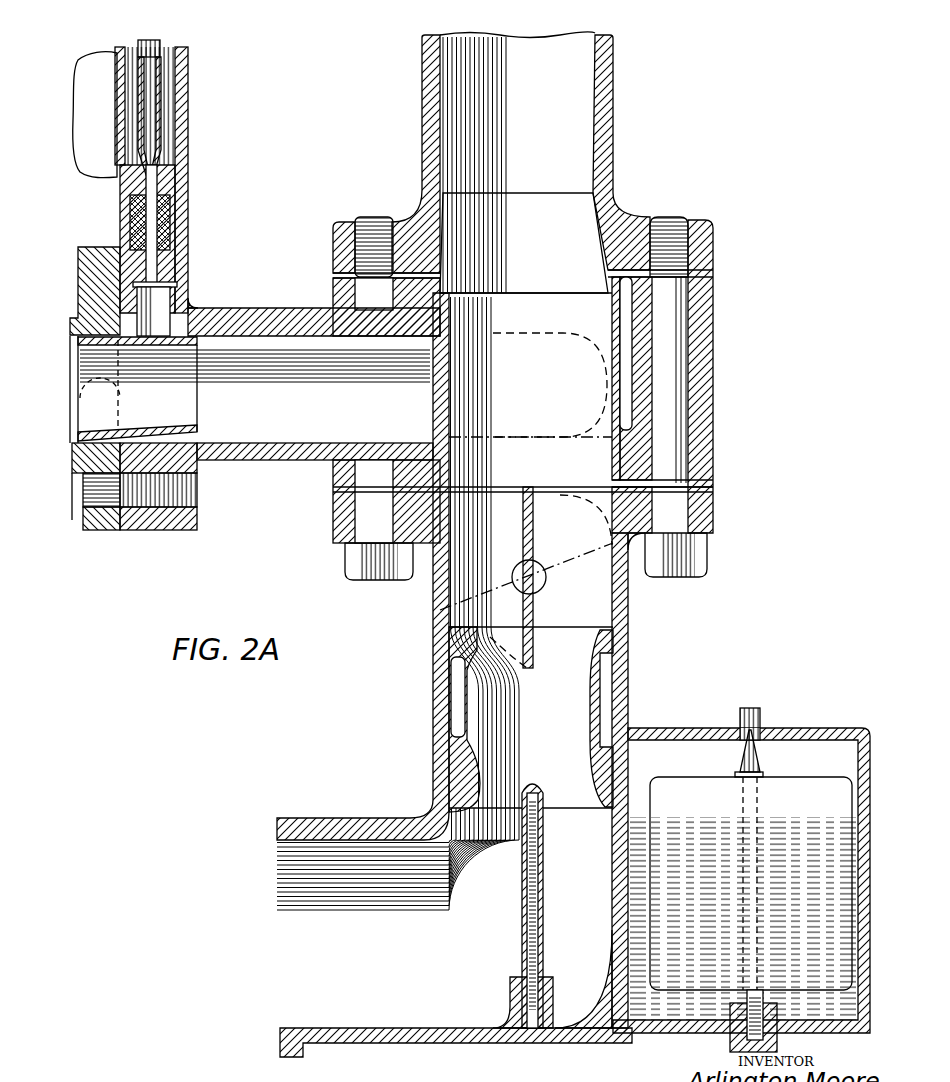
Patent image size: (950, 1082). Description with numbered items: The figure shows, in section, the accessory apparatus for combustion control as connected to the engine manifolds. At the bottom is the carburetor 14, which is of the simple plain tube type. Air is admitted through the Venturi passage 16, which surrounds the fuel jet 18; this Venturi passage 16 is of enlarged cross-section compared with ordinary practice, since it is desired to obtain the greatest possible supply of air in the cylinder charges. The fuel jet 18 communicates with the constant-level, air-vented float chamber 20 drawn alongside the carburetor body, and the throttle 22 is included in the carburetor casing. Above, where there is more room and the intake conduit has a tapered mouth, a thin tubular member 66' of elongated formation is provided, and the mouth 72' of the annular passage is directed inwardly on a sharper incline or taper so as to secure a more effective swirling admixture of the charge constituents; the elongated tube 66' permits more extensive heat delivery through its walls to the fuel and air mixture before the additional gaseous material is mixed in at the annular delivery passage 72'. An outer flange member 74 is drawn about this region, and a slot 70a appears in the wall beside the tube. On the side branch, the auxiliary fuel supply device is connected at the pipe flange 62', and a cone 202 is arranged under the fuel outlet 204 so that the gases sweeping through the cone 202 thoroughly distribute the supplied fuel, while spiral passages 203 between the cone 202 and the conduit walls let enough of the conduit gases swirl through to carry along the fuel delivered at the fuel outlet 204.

The carburetor 14 is at (493, 1042).
The Venturi passage 16 is at (480, 773).
The fuel jet 18 is at (553, 810).
The float chamber 20 is at (788, 752).
The throttle 22 is at (533, 617).
The pipe flange 62' is at (140, 517).
The thin tubular member 66' is at (584, 378).
The slot 70a is at (622, 342).
The mouth of the annular passage 72' is at (524, 162).
The flange 74 is at (613, 228).
The cone 202 is at (173, 427).
The spiral passages 203 is at (90, 440).
The fuel outlet 204 is at (160, 316).